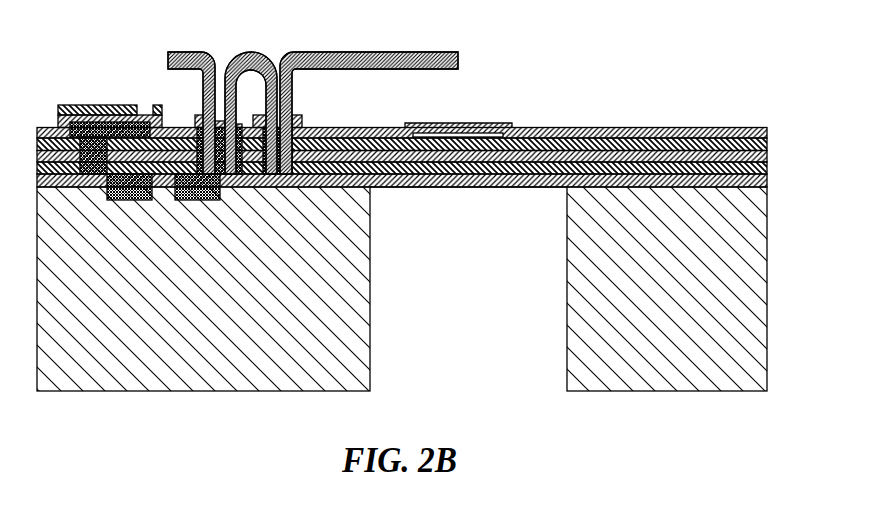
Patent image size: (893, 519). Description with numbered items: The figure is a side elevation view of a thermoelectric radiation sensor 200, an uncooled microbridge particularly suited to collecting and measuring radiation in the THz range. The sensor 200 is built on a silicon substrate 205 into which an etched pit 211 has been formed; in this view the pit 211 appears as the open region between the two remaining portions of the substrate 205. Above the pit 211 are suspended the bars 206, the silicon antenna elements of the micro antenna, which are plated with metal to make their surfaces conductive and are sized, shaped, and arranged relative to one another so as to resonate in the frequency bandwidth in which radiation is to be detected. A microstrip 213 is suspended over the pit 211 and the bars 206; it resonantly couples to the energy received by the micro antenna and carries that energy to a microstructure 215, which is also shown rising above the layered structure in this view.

The sensor 200 is at (677, 38).
The silicon substrate 205 is at (697, 380).
The bars 206 is at (468, 135).
The etched pit 211 is at (487, 300).
The microstrip 213 is at (383, 51).
The microstructure 215 is at (253, 51).